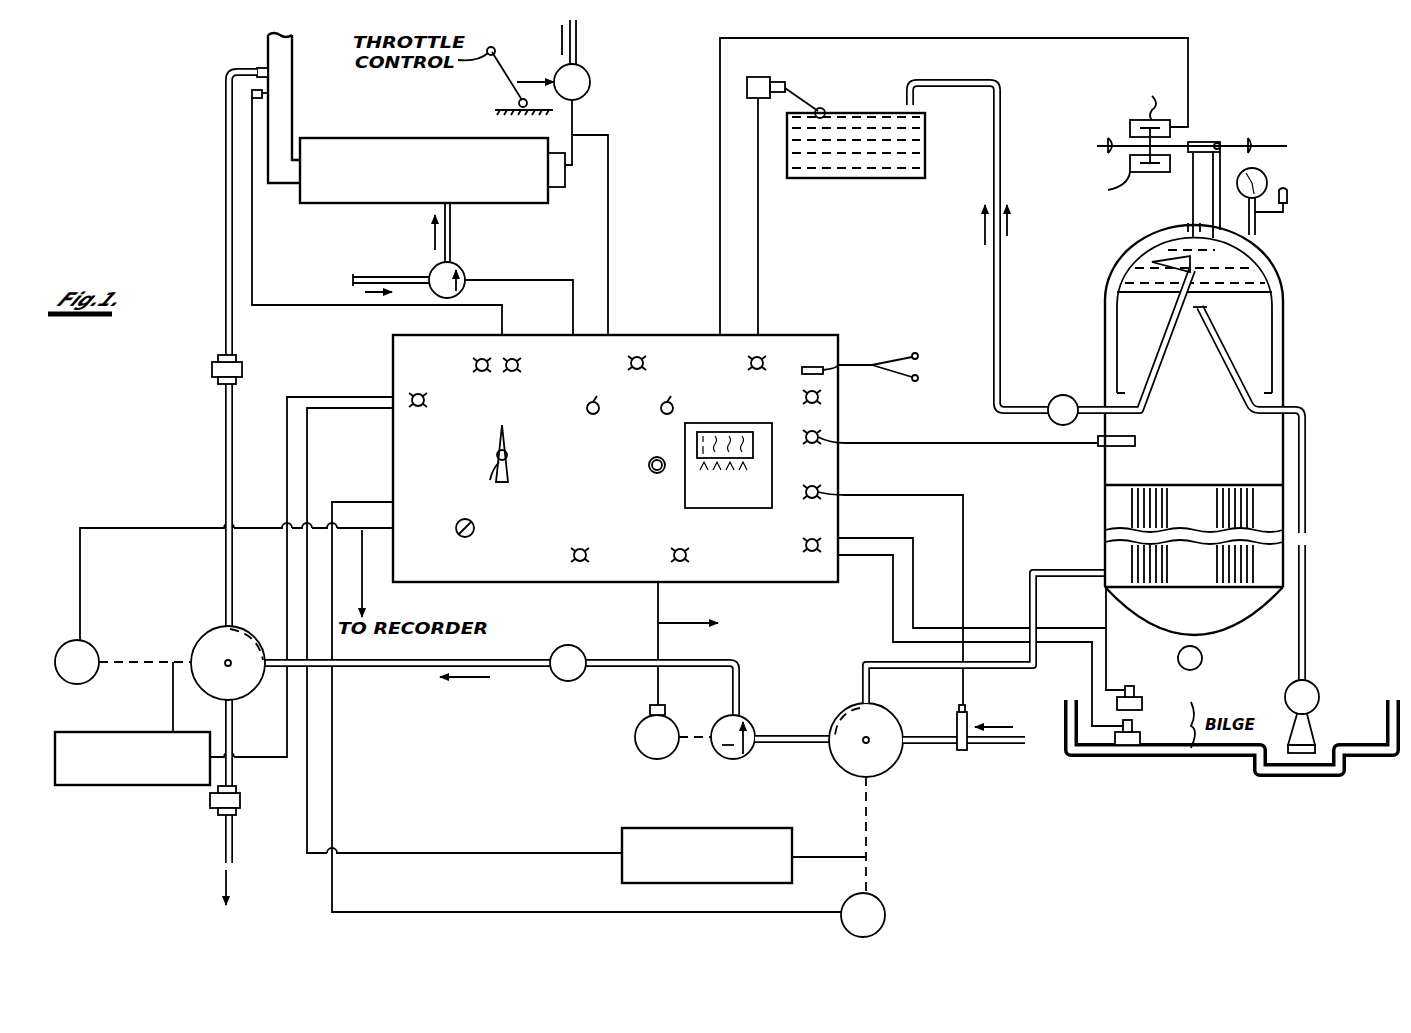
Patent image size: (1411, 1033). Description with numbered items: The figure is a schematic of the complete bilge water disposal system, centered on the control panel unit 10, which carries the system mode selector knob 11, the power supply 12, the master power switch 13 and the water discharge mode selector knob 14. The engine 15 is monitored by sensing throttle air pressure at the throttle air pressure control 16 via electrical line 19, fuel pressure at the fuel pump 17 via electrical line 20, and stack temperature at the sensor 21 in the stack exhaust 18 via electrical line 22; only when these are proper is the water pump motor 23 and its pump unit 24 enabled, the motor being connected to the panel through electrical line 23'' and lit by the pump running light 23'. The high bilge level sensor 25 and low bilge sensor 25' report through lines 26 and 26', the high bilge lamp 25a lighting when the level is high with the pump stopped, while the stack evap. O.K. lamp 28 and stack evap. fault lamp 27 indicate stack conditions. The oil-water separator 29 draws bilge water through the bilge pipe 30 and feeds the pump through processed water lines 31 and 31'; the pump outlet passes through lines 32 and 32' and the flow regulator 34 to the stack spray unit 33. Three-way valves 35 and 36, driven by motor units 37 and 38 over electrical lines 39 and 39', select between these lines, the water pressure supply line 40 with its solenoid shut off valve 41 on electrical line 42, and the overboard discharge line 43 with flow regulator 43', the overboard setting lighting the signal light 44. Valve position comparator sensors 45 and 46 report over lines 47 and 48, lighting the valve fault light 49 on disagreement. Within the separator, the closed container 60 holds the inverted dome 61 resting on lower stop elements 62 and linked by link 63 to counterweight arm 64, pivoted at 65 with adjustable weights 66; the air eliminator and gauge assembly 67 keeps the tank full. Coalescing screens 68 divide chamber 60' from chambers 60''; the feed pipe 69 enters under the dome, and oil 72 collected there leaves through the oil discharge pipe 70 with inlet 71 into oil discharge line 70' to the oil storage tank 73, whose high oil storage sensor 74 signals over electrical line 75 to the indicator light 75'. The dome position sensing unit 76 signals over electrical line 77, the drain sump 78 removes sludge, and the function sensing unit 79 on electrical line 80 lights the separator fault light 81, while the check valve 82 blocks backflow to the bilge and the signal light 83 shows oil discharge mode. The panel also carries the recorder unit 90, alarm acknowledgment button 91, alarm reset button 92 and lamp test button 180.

The control panel unit 10 is at (698, 330).
The system mode selector knob 11 is at (494, 474).
The power supply 12 is at (862, 356).
The master power switch 13 is at (873, 222).
The water discharge mode selector knob 14 is at (476, 536).
The engine 15 is at (384, 140).
The throttle air pressure control 16 is at (586, 76).
The fuel pump 17 is at (430, 268).
The stack exhaust 18 is at (292, 116).
The electrical line 19 is at (610, 242).
The electrical line 20 is at (575, 302).
The stack temperature sensor 21 is at (251, 95).
The electrical line 22 is at (252, 240).
The water pump motor 23 is at (645, 732).
The pump running light 23' is at (667, 535).
The electrical line 23'' is at (707, 643).
The pump unit 24 is at (730, 758).
The high bilge level sensor 25 is at (1154, 688).
The low bilge sensor 25' is at (1150, 758).
The high bilge lamp 25a is at (805, 545).
The electrical line 26 is at (981, 614).
The electrical line 26' is at (980, 640).
The stack evap. fault lamp 27 is at (520, 366).
The stack evap. O.K. lamp 28 is at (474, 366).
The oil-water separator 29 is at (1100, 308).
The bilge pipe 30 is at (1306, 632).
The processed water line 31 is at (985, 616).
The pump inlet line 31' is at (792, 711).
The water line 32 is at (216, 467).
The water line 32' is at (525, 680).
The stack spray unit 33 is at (270, 75).
The flow regulator 34 is at (212, 366).
The water flow control valve 35 is at (856, 700).
The water flow control valve 36 is at (206, 645).
The motor unit 37 is at (876, 898).
The motor unit 38 is at (106, 630).
The electrical line 39 is at (586, 685).
The electrical line 39' is at (236, 562).
The water pressure supply line 40 is at (1020, 736).
The solenoid shut off valve 41 is at (955, 712).
The electrical line 42 is at (963, 530).
The overboard discharge line 43 is at (225, 887).
The flow regulator 43' is at (249, 805).
The signal light 44 is at (645, 364).
The valve position comparator sensor 45 is at (622, 828).
The valve position comparator sensor 46 is at (92, 786).
The electrical line 47 is at (298, 858).
The electrical line 48 is at (286, 396).
The valve fault light 49 is at (395, 392).
The closed container 60 is at (1191, 442).
The chamber 60' is at (1188, 383).
The chambers 60'' is at (1154, 549).
The inverted dome 61 is at (1274, 316).
The lower stop elements 62 is at (1116, 392).
The link 63 is at (1192, 204).
The counterweight arm 64 is at (1234, 140).
The pivot 65 is at (1220, 170).
The adjustable weights 66 is at (1106, 143).
The air eliminator and pressure/vacuum gauge assembly 67 is at (1268, 176).
The coalescing screens 68 is at (1226, 584).
The feed pipe 69 is at (1233, 340).
The oil discharge pipe 70 is at (1135, 340).
The oil discharge line 70' is at (994, 233).
The inlet 71 is at (1186, 256).
The oil 72 is at (1152, 263).
The oil storage tank 73 is at (925, 140).
The high oil storage sensor 74 is at (757, 77).
The electrical line 75 is at (784, 216).
The indicator light 75' is at (733, 379).
The dome position sensing unit 76 is at (1134, 118).
The electrical line 77 is at (714, 55).
The drain sump 78 is at (1198, 664).
The function sensing unit 79 is at (1122, 436).
The electrical line 80 is at (898, 440).
The separator fault light 81 is at (837, 449).
The check valve 82 is at (1312, 690).
The signal light 83 is at (586, 550).
The recorder unit 90 is at (728, 424).
The alarm acknowledgment button 91 is at (660, 408).
The alarm reset button 92 is at (586, 408).
The lamp test button 180 is at (648, 467).